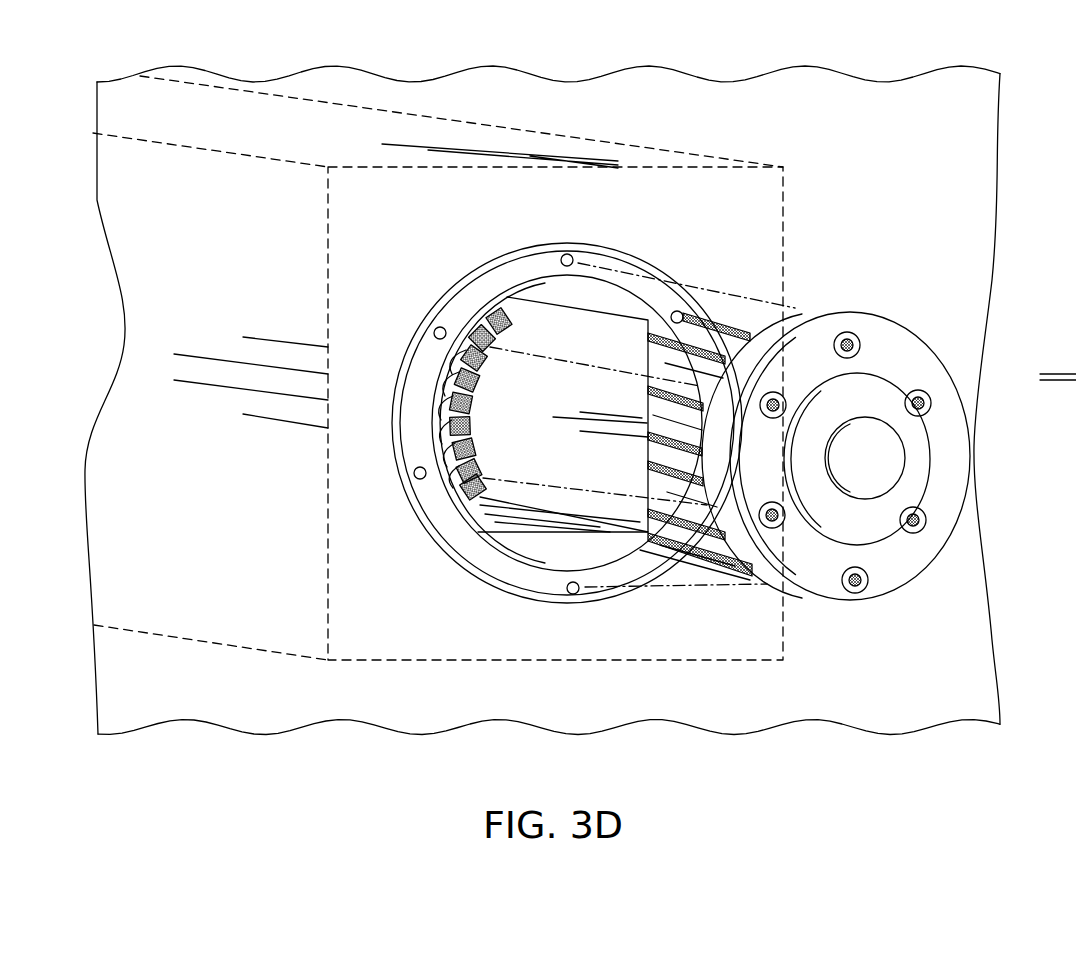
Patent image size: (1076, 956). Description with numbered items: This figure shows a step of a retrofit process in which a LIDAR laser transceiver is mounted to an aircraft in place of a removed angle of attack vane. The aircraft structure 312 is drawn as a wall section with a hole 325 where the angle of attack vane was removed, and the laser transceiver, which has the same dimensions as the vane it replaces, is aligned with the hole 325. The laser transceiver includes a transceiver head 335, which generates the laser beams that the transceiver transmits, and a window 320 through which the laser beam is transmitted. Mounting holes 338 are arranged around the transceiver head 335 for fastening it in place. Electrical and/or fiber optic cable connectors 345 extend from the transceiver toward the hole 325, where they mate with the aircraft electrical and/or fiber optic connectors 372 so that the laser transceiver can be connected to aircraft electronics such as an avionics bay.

The wall / housing section 312 is at (974, 285).
The window 320 is at (878, 440).
The hole 325 is at (593, 333).
The transceiver head 335 is at (929, 343).
The bolt holes 338 is at (857, 594).
The electrical connectors 345 is at (707, 320).
The aircraft electrical and/or fiber optic connectors 372 is at (447, 507).